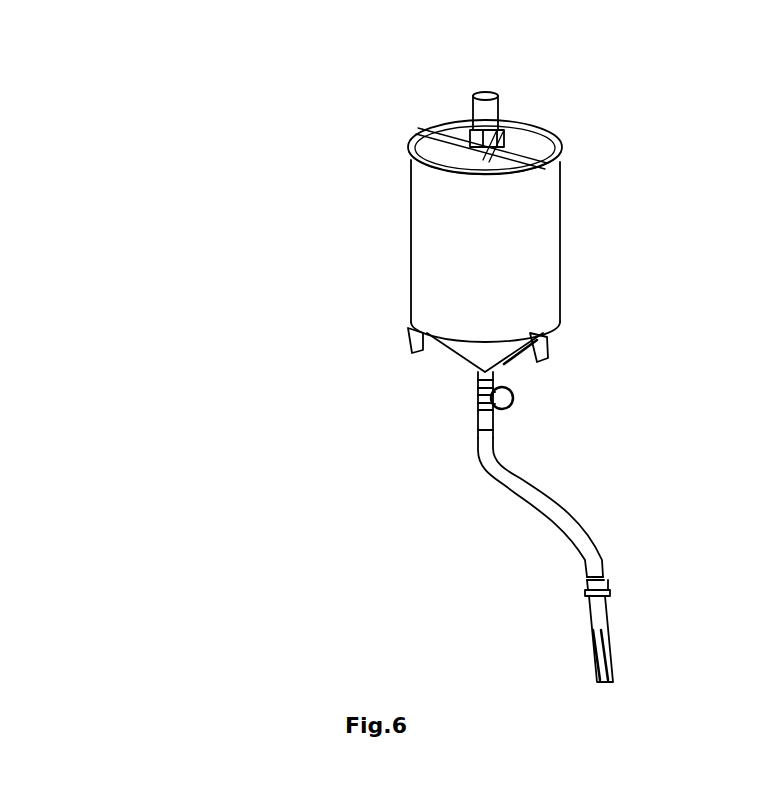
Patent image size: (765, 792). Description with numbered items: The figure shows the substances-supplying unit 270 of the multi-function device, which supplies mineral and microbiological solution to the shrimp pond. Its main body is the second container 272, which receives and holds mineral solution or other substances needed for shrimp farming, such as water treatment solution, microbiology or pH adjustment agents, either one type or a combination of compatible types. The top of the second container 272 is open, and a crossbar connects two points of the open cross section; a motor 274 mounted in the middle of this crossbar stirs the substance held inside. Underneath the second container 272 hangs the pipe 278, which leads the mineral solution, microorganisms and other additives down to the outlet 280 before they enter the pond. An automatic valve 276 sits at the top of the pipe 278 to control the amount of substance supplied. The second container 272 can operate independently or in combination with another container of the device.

The substances-supplying unit 270 is at (318, 363).
The second container 272 is at (412, 245).
The motor 274 is at (476, 102).
The automatic valve 276 is at (512, 391).
The pipe 278 is at (527, 495).
The outlet 280 is at (596, 650).